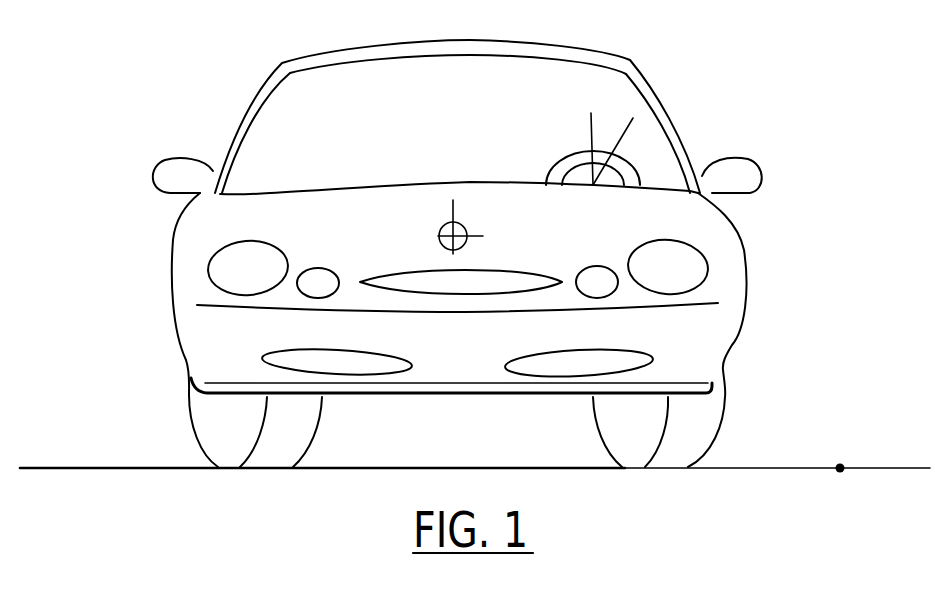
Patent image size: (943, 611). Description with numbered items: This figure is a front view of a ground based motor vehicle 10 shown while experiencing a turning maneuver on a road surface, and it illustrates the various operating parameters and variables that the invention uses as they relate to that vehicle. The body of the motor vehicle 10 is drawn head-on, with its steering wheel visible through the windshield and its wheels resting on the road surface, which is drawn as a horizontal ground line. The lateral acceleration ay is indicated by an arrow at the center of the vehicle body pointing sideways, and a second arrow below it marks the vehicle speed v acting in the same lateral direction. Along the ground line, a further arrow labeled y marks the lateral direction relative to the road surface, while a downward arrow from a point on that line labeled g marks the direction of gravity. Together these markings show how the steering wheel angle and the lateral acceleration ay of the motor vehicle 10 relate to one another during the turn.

The motor vehicle 10 is at (905, 98).
The lateral acceleration ay is at (453, 212).
The vehicle velocity v is at (438, 238).
The lateral axis / ground y is at (475, 483).
The gravitational acceleration g is at (840, 468).